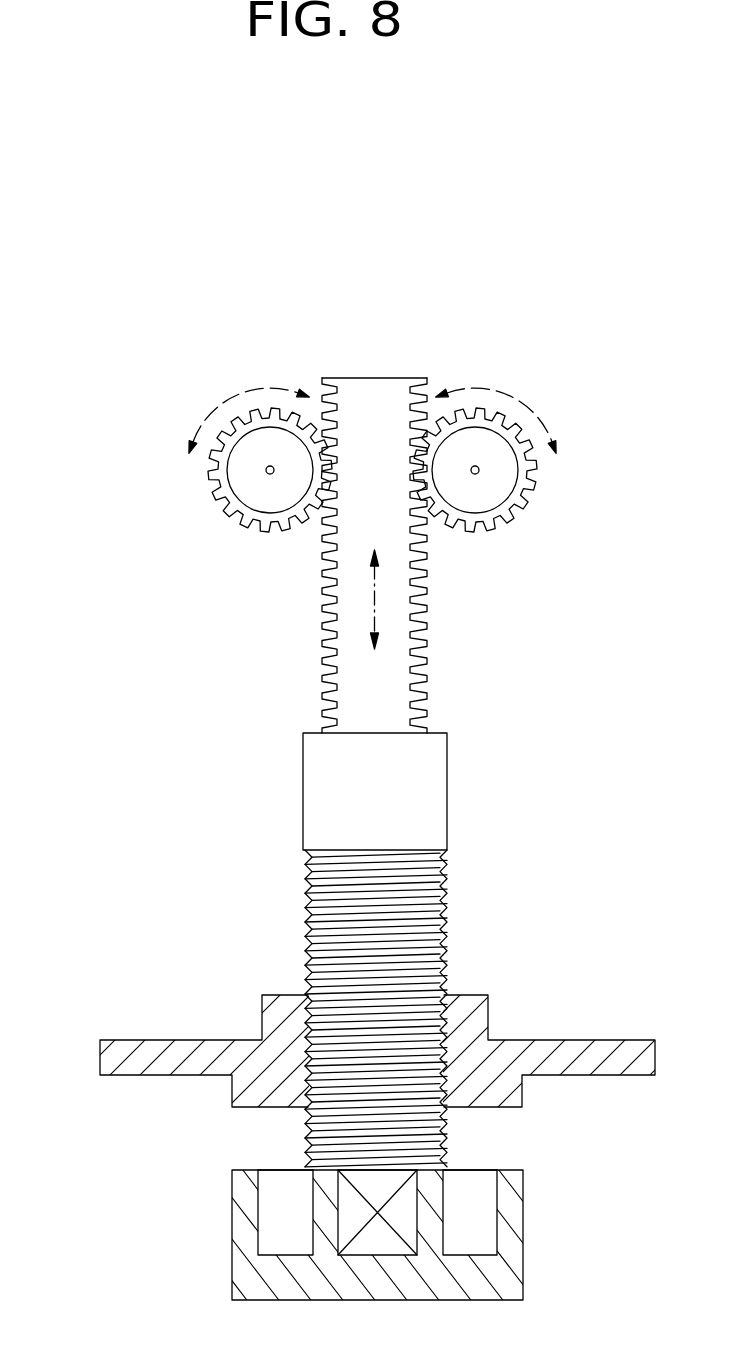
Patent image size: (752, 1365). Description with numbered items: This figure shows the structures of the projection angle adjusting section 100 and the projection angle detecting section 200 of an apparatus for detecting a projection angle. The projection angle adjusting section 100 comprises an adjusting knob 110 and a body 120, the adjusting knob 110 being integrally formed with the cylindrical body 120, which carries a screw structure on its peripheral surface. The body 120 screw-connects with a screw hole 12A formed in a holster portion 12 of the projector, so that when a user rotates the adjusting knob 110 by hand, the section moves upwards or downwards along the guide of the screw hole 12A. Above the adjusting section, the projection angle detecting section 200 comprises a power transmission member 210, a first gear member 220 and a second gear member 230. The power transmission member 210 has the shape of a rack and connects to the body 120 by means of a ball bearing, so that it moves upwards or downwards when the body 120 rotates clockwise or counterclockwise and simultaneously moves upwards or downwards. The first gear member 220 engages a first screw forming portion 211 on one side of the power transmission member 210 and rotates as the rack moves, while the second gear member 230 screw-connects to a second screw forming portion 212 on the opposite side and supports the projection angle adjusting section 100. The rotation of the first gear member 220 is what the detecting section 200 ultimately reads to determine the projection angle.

The projection angle detecting section 200 is at (80, 490).
The first gear member 220 is at (213, 493).
The second gear member 230 is at (535, 493).
The power transmission member 210 is at (370, 692).
The first screw forming portion 211 is at (322, 598).
The second screw forming portion 212 is at (427, 597).
The projection angle adjusting section 100 is at (80, 903).
The body 120 is at (305, 895).
The holster portion 12 is at (243, 1087).
The screw hole 12A is at (308, 1025).
The adjusting knob 110 is at (255, 1275).